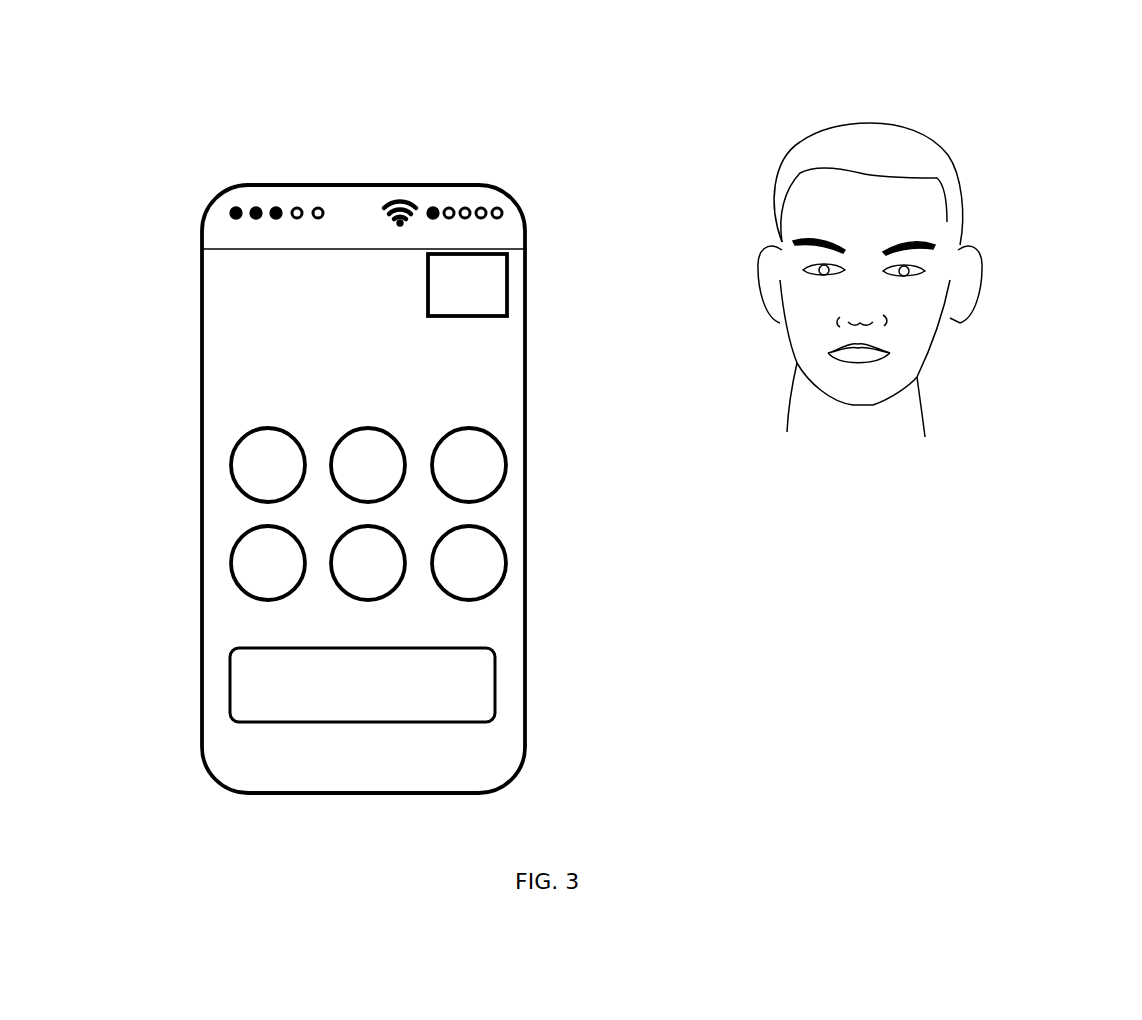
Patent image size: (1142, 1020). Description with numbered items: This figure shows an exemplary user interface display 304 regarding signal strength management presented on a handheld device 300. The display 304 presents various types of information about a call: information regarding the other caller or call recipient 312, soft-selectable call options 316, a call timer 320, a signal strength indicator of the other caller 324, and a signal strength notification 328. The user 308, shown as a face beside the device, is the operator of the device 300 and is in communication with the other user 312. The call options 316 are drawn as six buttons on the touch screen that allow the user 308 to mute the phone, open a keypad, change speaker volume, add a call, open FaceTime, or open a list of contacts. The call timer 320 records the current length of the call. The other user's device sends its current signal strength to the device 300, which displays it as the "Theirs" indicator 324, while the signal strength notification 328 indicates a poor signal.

The device 300 is at (298, 72).
The user interface display 304 is at (200, 724).
The user 308 is at (986, 389).
The another caller 312 is at (305, 291).
The call options 316 is at (212, 590).
The call timer 320 is at (330, 322).
The signal strength indicator of the other caller 324 is at (501, 219).
The signal strength notification 328 is at (514, 303).